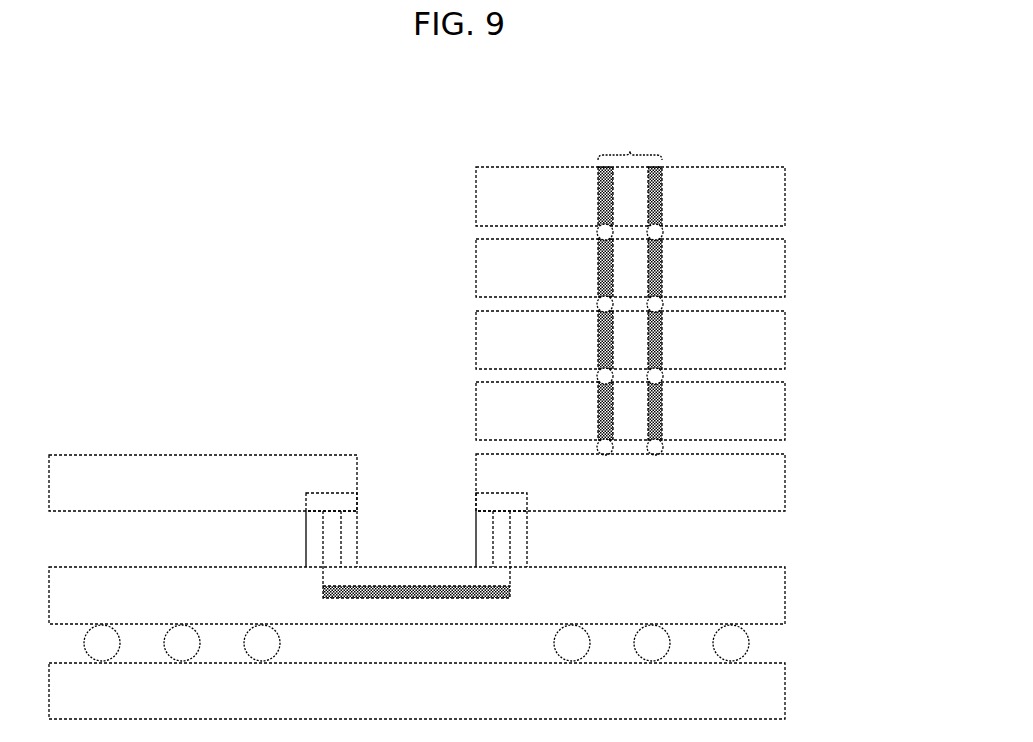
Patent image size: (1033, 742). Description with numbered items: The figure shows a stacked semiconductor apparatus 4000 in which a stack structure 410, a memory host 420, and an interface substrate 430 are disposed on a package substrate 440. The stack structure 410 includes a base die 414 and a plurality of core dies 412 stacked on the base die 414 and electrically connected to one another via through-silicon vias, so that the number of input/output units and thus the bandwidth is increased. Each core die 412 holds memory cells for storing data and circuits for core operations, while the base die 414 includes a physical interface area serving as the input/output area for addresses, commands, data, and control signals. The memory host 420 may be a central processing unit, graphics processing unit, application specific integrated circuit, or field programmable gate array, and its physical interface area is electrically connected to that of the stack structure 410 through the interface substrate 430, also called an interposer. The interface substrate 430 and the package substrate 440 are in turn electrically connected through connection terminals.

The stacked semiconductor apparatus 4000 is at (753, 118).
The stack structure 410 is at (624, 318).
The core die 412 is at (476, 338).
The base die 414 is at (785, 511).
The memory host 420 is at (309, 455).
The interface substrate 430 is at (785, 590).
The package substrate 440 is at (785, 685).